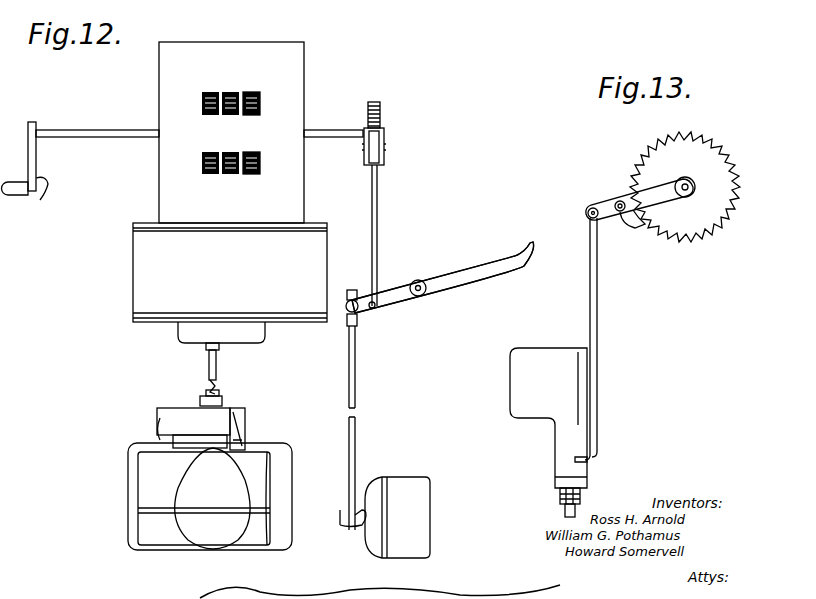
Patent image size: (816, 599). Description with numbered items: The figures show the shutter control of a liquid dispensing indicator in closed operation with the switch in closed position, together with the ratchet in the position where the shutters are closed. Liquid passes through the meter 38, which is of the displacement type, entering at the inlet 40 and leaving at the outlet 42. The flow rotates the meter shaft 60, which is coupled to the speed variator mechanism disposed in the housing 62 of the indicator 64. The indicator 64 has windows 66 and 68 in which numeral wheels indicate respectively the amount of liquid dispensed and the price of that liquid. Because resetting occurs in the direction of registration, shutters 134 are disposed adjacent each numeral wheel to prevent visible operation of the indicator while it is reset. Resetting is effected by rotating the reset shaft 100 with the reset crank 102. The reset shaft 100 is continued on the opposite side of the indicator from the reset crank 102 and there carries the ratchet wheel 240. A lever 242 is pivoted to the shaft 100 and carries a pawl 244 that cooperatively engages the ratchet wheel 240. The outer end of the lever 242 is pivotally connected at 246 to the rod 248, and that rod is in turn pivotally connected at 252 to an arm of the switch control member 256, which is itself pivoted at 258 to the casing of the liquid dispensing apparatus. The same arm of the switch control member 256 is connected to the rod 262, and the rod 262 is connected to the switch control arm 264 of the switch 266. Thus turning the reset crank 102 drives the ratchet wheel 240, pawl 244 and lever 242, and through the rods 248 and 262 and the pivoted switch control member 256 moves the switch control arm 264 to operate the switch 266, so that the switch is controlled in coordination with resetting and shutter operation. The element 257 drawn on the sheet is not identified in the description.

In FIG. 12, the meter 38 is at (140, 488).
In FIG. 12, the inlet 40 is at (160, 412).
In FIG. 12, the outlet 42 is at (246, 427).
In FIG. 12, the meter shaft 60 is at (218, 370).
In FIG. 12, the housing 62 is at (201, 283).
In FIG. 12, the indicator 64 is at (291, 86).
In FIG. 12, the window 66 is at (202, 168).
In FIG. 12, the window 68 is at (202, 100).
In FIG. 12, the reset shaft 100 is at (86, 130).
In FIG. 13, the reset shaft 100 is at (715, 150).
In FIG. 12, the reset crank 102 is at (40, 200).
In FIG. 12, the shutter 134 is at (260, 100).
In FIG. 12, the ratchet wheel 240 is at (380, 104).
In FIG. 13, the ratchet wheel 240 is at (677, 152).
In FIG. 12, the lever 242 is at (384, 141).
In FIG. 13, the lever 242 is at (608, 205).
In FIG. 13, the pawl 244 is at (633, 228).
In FIG. 13, the pivotal connection 246 is at (586, 213).
In FIG. 12, the rod 248 is at (378, 184).
In FIG. 13, the rod 248 is at (598, 366).
In FIG. 12, the pivotal connection 252 is at (372, 309).
In FIG. 12, the switch control member 256 is at (453, 277).
In FIG. 12, the lever arm 257 is at (393, 292).
In FIG. 13, the lever arm 257 is at (562, 440).
In FIG. 12, the pivot 258 is at (421, 281).
In FIG. 12, the rod 262 is at (356, 390).
In FIG. 13, the rod 262 is at (566, 510).
In FIG. 12, the switch control arm 264 is at (340, 522).
In FIG. 12, the switch 266 is at (405, 478).